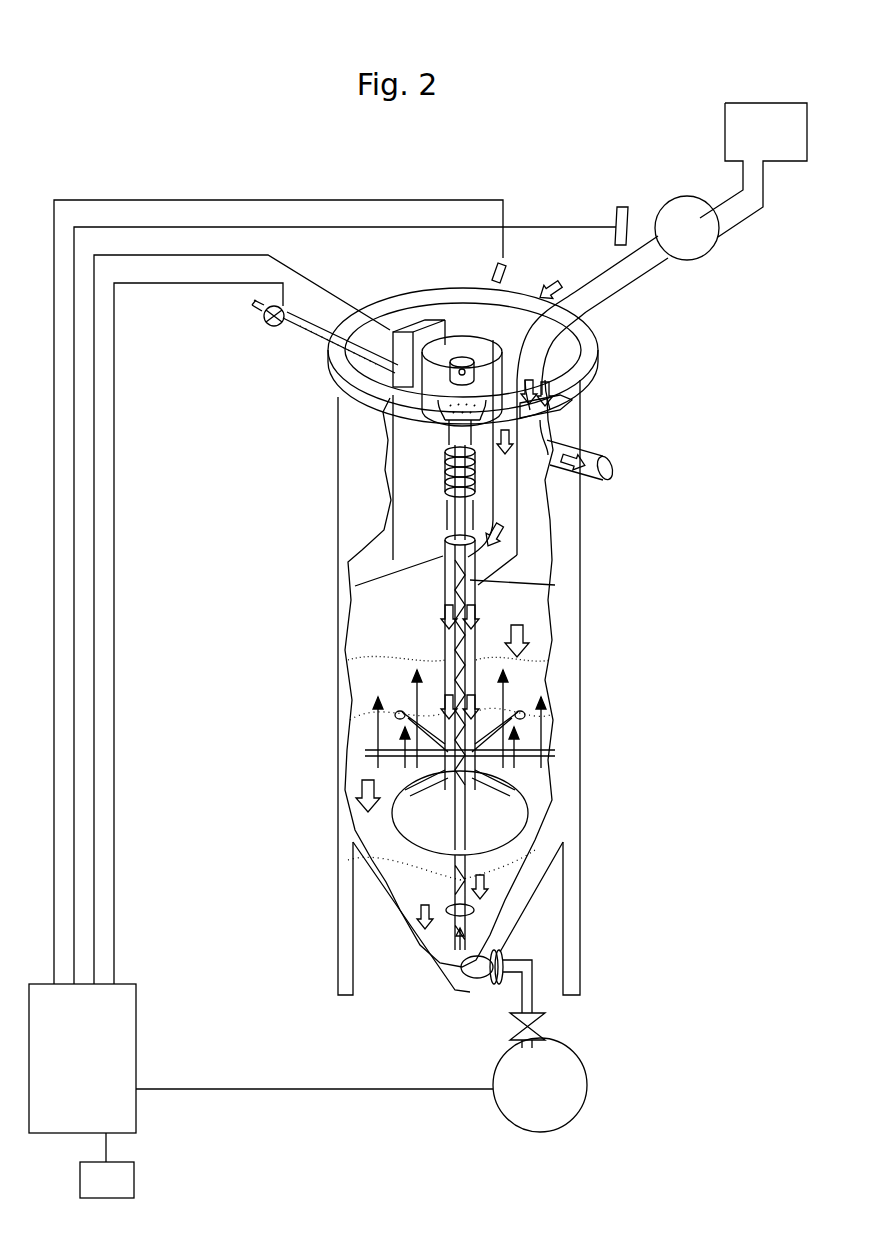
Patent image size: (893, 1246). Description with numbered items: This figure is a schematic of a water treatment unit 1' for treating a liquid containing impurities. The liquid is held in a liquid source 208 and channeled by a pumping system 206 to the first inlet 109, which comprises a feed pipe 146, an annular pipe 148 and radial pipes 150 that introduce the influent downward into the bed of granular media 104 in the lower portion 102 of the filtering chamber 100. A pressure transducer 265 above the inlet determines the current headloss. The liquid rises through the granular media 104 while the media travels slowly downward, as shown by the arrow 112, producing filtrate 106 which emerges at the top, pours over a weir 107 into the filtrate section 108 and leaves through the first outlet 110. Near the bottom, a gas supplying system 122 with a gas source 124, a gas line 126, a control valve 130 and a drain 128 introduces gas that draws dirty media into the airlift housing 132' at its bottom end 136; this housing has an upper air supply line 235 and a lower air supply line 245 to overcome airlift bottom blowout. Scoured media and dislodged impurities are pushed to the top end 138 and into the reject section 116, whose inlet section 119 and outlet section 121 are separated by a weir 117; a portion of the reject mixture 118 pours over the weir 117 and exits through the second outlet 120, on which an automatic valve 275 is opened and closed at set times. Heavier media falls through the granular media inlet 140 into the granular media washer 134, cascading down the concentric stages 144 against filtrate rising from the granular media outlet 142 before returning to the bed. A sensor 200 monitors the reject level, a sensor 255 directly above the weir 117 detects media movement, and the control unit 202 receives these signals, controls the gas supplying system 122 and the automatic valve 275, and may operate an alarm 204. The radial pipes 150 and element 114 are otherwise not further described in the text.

The water treatment unit 1' is at (262, 561).
The filtering chamber 100 is at (358, 478).
The lower portion 102 is at (360, 768).
The granular media 104 is at (548, 677).
The filtrate 106 is at (360, 548).
The weir 107 is at (575, 378).
The filtrate section 108 is at (553, 412).
The first inlet 109 is at (512, 300).
The first outlet 110 is at (605, 470).
The downward direction 112 is at (548, 612).
The agitator blades 114 is at (548, 708).
The reject section 116 is at (462, 350).
The weir 117 is at (445, 412).
The portion of the reject mixture 118 is at (368, 338).
The inlet section 119 is at (455, 440).
The second outlet 120 is at (290, 330).
The outlet section 121 is at (420, 385).
The gas supplying system 122 is at (628, 1012).
The gas source 124 is at (526, 1096).
The gas line 126 is at (522, 1000).
The drain 128 is at (472, 972).
The control valve 130 is at (540, 1027).
The airlift housing 132' is at (401, 655).
The granular media washer 134 is at (447, 492).
The bottom end 136 is at (445, 945).
The top end 138 is at (585, 342).
The granular media inlet 140 is at (553, 440).
The granular media outlet 142 is at (456, 518).
The concentric stages 144 is at (520, 520).
The feed pipe 146 is at (585, 308).
The annular pipe 148 is at (548, 645).
The radial pipes 150 is at (365, 742).
The sensor 200 is at (440, 350).
The control unit 202 is at (136, 1033).
The alarm 204 is at (134, 1179).
The pumping system 206 is at (680, 200).
The liquid source 208 is at (725, 133).
The upper air supply line 235 is at (380, 685).
The lower air supply line 245 is at (548, 742).
The sensor 255 is at (490, 270).
The pressure transducer 265 is at (620, 207).
The automatic valve 275 is at (262, 322).